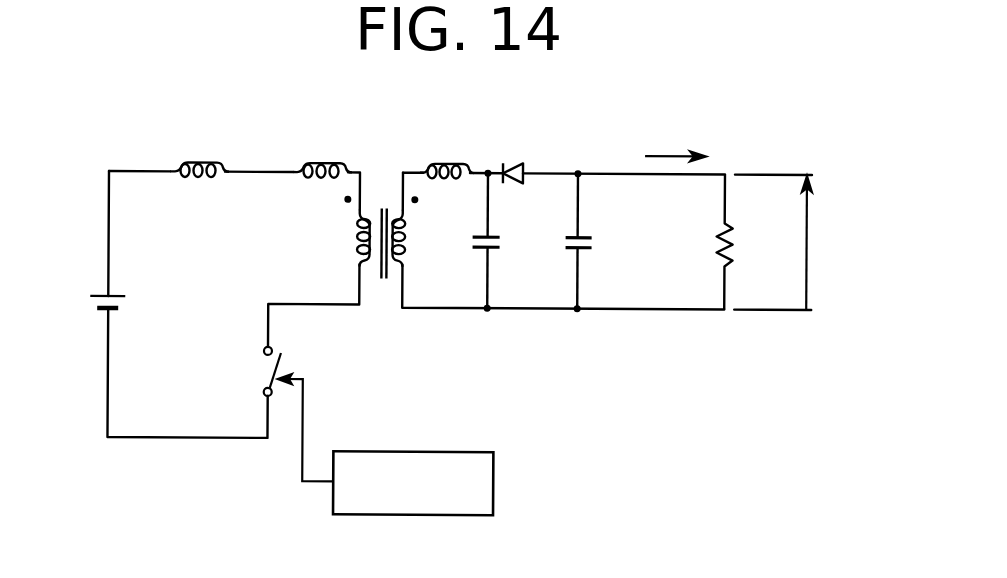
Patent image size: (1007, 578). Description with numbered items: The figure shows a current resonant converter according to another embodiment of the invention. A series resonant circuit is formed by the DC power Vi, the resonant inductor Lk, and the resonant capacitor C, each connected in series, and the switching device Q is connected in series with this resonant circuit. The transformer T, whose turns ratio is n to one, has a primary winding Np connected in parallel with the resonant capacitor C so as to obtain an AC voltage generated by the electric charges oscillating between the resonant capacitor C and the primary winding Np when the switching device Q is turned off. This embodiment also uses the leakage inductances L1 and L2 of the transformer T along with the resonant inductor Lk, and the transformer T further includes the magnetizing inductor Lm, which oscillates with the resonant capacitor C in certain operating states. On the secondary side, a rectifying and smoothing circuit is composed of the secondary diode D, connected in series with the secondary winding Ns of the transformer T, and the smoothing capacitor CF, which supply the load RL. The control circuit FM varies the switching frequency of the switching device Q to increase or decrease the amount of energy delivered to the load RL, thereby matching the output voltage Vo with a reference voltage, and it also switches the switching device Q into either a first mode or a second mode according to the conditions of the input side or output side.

The DC power Vi is at (87, 300).
The resonant inductor Lk is at (199, 150).
The leakage inductance L1 is at (322, 151).
The transformer T is at (383, 198).
The primary winding Np is at (338, 231).
The secondary winding Ns is at (419, 231).
The leakage inductance L2 is at (447, 152).
The secondary diode D is at (513, 154).
The resonant capacitor C is at (497, 241).
The smoothing capacitor CF is at (597, 241).
The load RL is at (743, 241).
The output voltage Vo is at (824, 243).
The output current Io is at (675, 140).
The switching device Q is at (257, 371).
The magnetizing inductor Lm is at (365, 391).
The control circuit FM is at (433, 450).